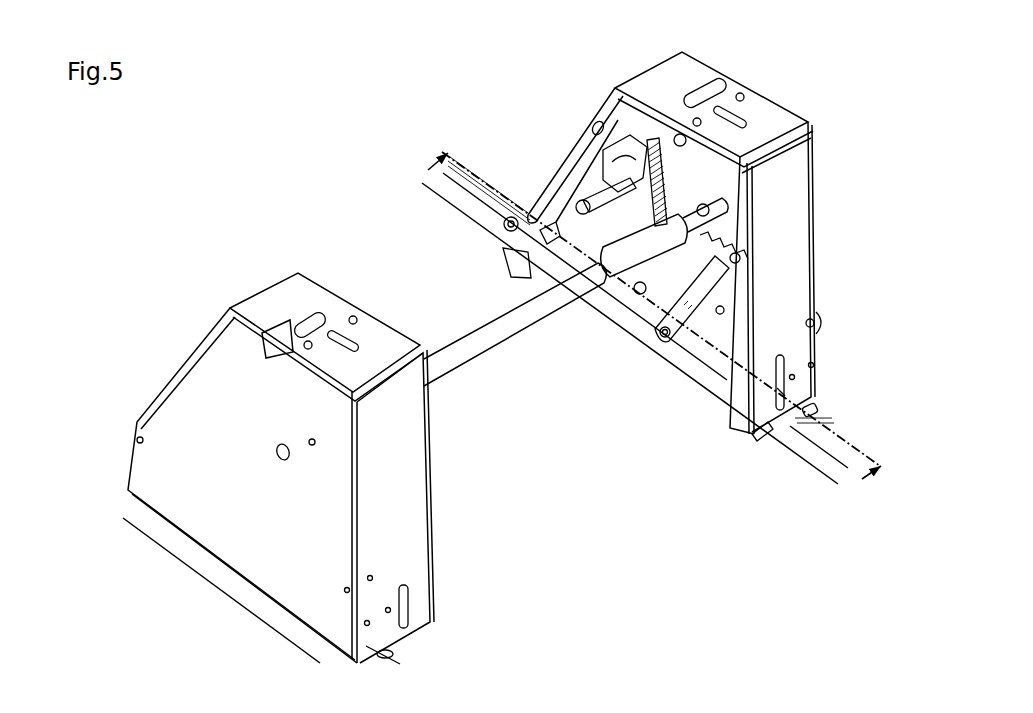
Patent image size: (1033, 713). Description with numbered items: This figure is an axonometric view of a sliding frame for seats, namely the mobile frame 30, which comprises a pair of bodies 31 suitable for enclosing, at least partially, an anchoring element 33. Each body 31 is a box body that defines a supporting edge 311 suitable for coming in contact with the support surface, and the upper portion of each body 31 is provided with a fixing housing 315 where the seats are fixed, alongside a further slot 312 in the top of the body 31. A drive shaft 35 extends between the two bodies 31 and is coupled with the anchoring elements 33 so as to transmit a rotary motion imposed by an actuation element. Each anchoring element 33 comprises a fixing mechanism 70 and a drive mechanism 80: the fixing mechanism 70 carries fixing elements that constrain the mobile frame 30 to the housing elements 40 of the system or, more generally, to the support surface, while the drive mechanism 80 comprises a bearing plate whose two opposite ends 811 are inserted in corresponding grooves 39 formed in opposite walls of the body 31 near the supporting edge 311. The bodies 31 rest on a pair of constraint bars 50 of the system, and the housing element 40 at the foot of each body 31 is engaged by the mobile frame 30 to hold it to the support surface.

The mobile frame 30 is at (150, 320).
The body 31 is at (230, 305).
The supporting edge 311 is at (768, 424).
The top slot of bracket 312 is at (291, 312).
The fixing housing 315 is at (722, 88).
The anchoring element 33 is at (556, 240).
The drive shaft 35 is at (502, 340).
The groove 39 is at (784, 362).
The housing element 40 is at (810, 424).
The constraint bar 50 is at (196, 565).
The fixing mechanism 70 is at (606, 183).
The drive mechanism 80 is at (708, 341).
The end of the bearing plate 811 is at (783, 393).